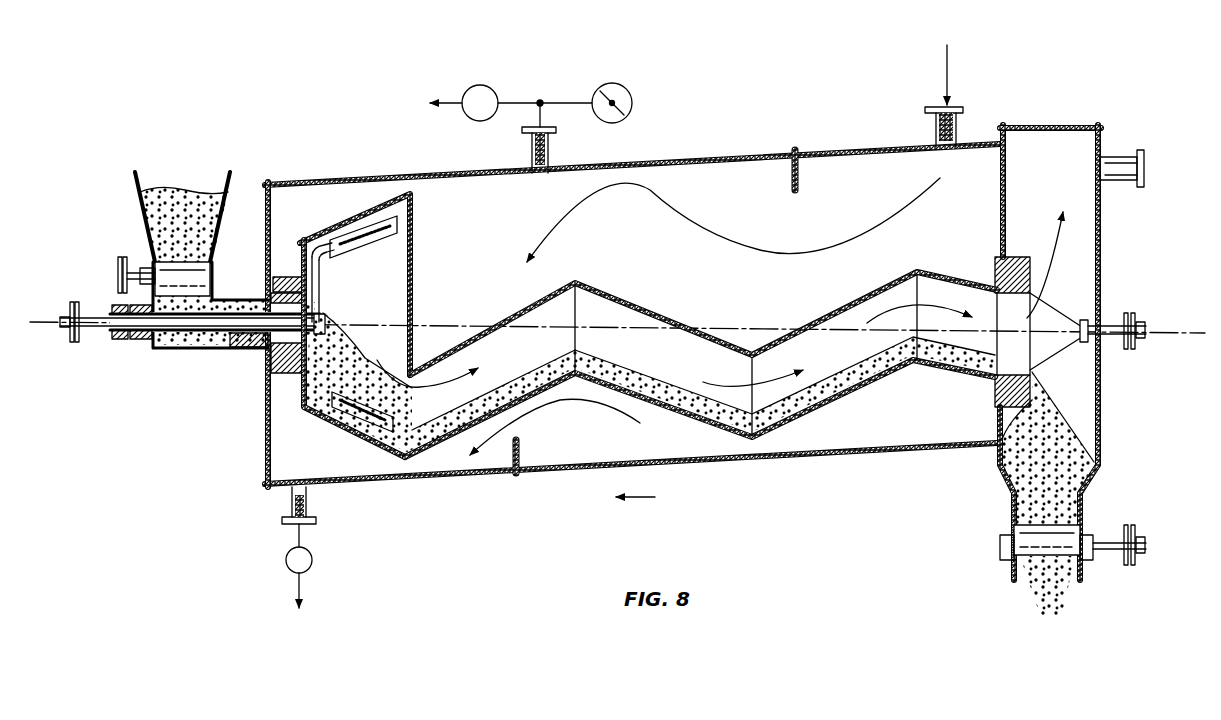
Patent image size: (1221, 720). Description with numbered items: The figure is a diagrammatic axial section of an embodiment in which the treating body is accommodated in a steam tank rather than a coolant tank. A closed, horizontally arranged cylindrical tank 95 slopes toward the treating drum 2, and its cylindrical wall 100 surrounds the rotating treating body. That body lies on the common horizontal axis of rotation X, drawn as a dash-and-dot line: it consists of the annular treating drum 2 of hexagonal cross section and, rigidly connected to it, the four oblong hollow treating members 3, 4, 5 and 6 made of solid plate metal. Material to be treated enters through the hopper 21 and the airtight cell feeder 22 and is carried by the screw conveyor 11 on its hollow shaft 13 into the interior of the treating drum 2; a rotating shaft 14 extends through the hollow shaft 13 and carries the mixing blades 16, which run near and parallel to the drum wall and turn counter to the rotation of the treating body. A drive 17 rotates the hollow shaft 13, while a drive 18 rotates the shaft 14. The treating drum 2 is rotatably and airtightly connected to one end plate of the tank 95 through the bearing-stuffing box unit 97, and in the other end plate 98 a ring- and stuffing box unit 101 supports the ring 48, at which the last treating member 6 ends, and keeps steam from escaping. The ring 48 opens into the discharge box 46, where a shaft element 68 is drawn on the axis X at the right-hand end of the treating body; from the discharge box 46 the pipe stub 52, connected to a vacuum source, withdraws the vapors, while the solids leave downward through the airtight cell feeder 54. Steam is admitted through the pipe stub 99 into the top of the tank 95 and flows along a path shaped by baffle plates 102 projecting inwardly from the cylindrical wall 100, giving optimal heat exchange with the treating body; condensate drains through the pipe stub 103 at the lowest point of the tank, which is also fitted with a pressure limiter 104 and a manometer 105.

The cylindrical wall 100 is at (386, 174).
The cylindrical tank 95 is at (740, 152).
The treating drum 2 is at (414, 243).
The mixing blades 16 is at (355, 242).
The bearing-stuffing box unit 97 is at (292, 374).
The treating member 3 is at (506, 313).
The treating member 4 is at (650, 311).
The treating member 5 is at (812, 315).
The treating member 6 is at (962, 271).
The end plate 98 is at (1007, 180).
The pipe stub 99 is at (924, 126).
The ring- and stuffing box unit 101 is at (1012, 266).
The ring 48 is at (994, 398).
The discharge box 46 is at (1103, 233).
The pipe stub 52 is at (1124, 156).
The drive shaft 68 is at (1140, 340).
The airtight cell feeder 54 is at (1012, 560).
The hopper 21 is at (134, 183).
The airtight cell feeder 22 is at (158, 263).
The rotating shaft 14 is at (96, 316).
The drive 18 is at (50, 342).
The drive 17 is at (122, 342).
The hollow shaft 13 is at (176, 348).
The screw conveyor 11 is at (232, 346).
The baffle plates 102 is at (800, 178).
The pipe stub 103 is at (312, 508).
The pressure limiter 104 is at (484, 88).
The manometer 105 is at (610, 84).
The horizontal axis X is at (1192, 327).